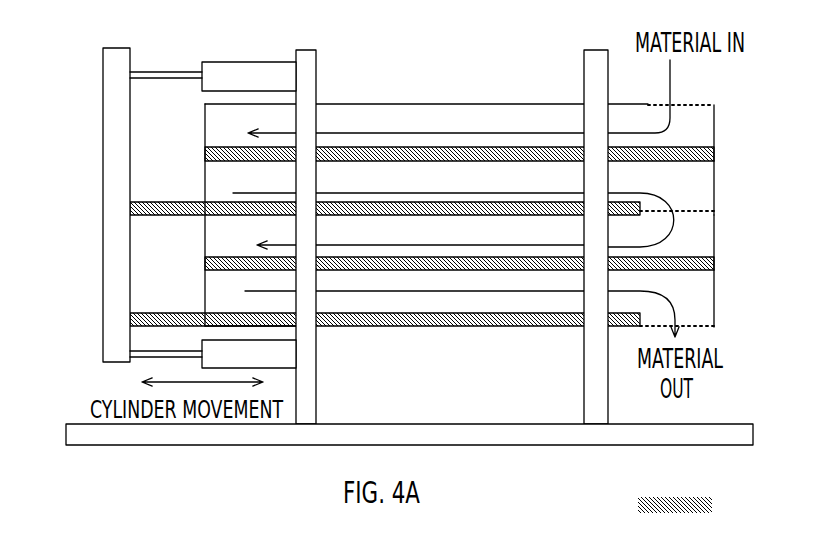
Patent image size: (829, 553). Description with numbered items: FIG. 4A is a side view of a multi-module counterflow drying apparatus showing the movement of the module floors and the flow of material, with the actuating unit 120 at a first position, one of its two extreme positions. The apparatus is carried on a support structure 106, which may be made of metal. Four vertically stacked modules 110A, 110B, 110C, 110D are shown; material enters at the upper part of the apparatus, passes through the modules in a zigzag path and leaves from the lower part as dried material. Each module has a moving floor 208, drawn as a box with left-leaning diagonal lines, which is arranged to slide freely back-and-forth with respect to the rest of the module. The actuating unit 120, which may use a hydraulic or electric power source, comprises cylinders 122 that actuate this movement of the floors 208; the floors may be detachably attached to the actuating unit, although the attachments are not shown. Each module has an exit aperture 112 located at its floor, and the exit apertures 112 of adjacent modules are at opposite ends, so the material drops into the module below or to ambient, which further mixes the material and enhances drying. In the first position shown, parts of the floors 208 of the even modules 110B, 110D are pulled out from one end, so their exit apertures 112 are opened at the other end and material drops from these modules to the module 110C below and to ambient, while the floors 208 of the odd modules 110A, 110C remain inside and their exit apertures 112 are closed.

The support structure 106 is at (368, 424).
The module 110A is at (723, 123).
The module 110B is at (723, 183).
The module 110C is at (724, 224).
The module 110D is at (722, 290).
The exit aperture 112 is at (199, 164).
The actuating unit 120 is at (92, 75).
The cylinder 122 is at (265, 58).
The floor 208 is at (709, 505).